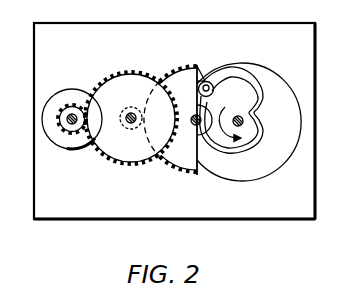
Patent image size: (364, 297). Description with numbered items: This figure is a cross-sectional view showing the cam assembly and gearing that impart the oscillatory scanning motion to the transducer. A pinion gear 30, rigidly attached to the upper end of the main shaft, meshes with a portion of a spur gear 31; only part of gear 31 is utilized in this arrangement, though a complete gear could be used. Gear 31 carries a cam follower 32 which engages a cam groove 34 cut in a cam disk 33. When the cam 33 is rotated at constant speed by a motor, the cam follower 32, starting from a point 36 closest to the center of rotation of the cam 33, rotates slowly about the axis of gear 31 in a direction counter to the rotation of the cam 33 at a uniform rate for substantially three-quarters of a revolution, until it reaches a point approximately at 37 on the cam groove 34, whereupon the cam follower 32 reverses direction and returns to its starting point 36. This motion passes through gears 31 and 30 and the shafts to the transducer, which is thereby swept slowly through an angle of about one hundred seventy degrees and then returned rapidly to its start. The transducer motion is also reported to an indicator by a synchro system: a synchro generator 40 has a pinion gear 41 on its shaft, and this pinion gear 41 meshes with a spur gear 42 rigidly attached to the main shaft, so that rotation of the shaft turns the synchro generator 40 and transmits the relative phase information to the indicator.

The pinion gear 30 is at (131, 131).
The spur gear 31 is at (182, 163).
The cam follower 32 is at (207, 84).
The cam disk 33 is at (252, 175).
The cam groove 34 is at (267, 91).
The starting point 36 is at (262, 112).
The reversal point 37 is at (203, 80).
The synchro generator 40 is at (67, 88).
The pinion gear 41 is at (67, 127).
The spur gear 42 is at (115, 155).